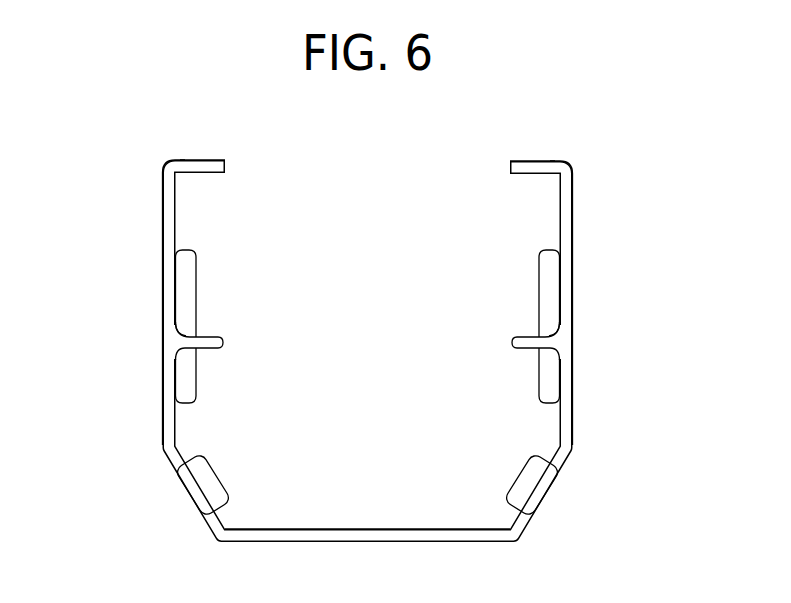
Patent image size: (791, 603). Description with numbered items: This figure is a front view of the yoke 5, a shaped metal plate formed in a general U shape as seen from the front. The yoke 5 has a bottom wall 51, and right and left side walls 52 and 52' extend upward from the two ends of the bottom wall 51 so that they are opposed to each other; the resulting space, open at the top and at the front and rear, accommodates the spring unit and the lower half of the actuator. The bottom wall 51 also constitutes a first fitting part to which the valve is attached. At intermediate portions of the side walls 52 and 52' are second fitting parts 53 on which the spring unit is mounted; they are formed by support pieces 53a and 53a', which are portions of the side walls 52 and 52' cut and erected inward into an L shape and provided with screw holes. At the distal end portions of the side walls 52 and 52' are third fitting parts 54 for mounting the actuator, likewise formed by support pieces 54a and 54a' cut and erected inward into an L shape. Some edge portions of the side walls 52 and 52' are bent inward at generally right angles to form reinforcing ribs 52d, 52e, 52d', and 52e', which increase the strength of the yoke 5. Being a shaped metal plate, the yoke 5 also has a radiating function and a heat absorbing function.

The yoke 5 is at (156, 197).
The bottom wall 51 is at (367, 528).
The side wall 52 is at (120, 312).
The side wall 52' is at (618, 312).
The reinforcing rib 52d is at (223, 308).
The reinforcing rib 52d' is at (511, 309).
The reinforcing rib 52e is at (229, 467).
The reinforcing rib 52e' is at (502, 467).
The second fitting part 53 is at (219, 328).
The support piece 53a is at (123, 340).
The support piece 53a' is at (613, 342).
The third fitting part 54 is at (208, 148).
The support piece 54a is at (155, 135).
The support piece 54a' is at (582, 136).